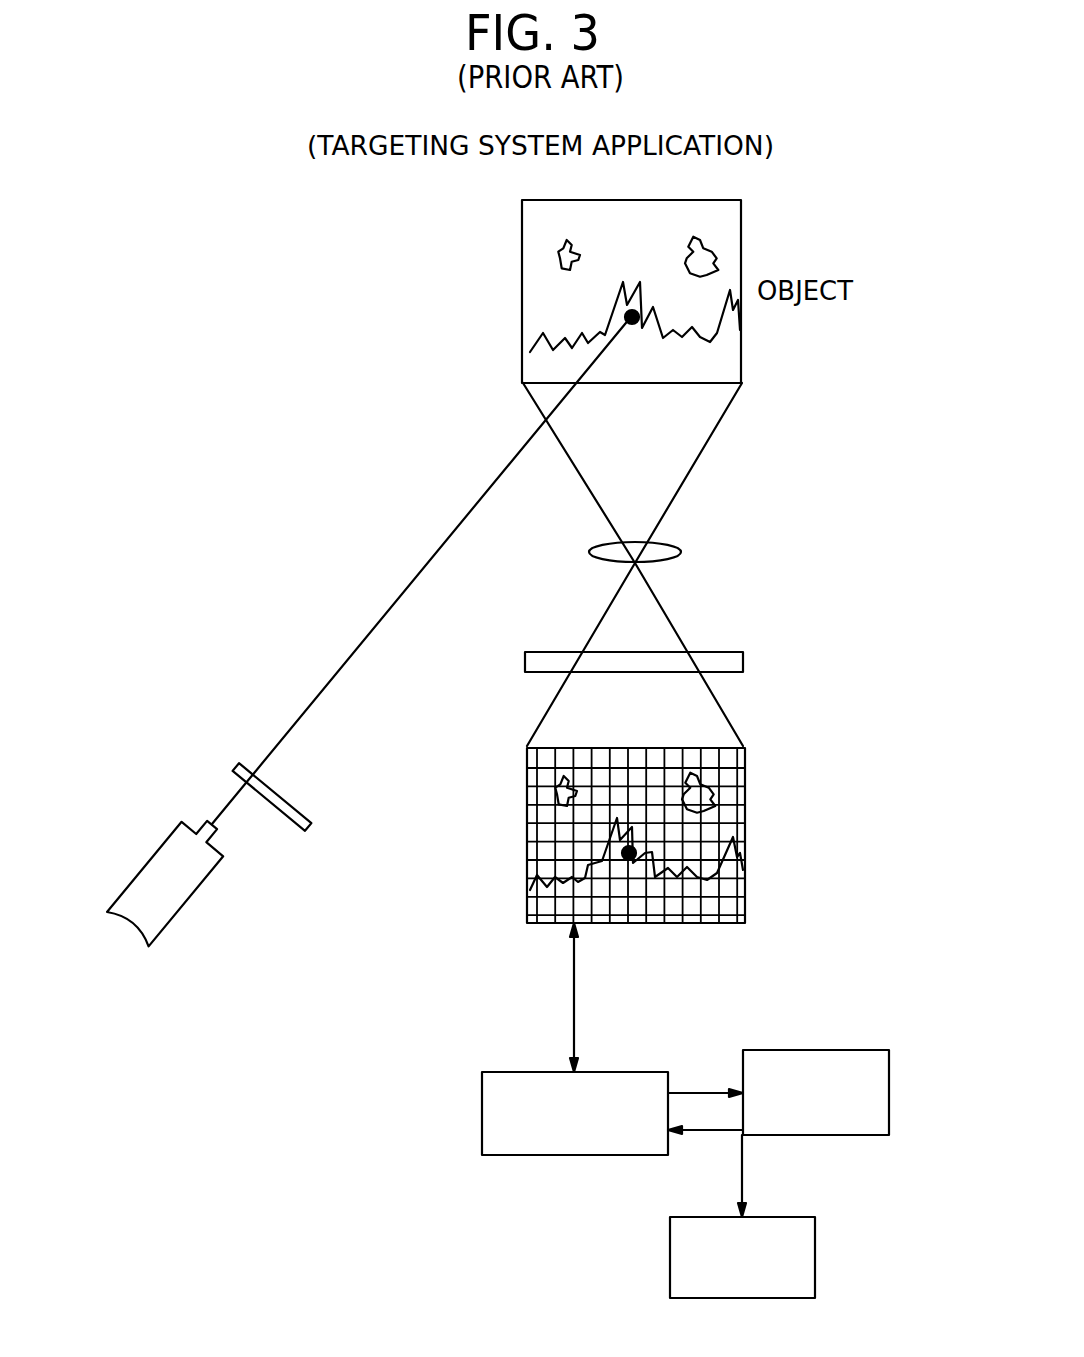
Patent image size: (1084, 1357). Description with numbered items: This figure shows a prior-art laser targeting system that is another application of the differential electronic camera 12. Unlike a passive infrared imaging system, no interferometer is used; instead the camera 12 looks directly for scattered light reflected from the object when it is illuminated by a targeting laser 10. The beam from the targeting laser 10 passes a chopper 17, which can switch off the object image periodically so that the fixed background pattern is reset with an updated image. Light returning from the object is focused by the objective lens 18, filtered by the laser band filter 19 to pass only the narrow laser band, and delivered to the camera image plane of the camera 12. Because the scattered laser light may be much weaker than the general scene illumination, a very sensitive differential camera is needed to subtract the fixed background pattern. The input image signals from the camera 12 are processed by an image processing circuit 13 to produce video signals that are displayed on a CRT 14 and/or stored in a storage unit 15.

The targeting laser 10 is at (172, 845).
The chopper 17 is at (305, 828).
The objective lens 18 is at (668, 543).
The laser band filter 19 is at (525, 661).
The camera 12 is at (723, 907).
The image processing circuit 13 is at (630, 1087).
The CRT 14 is at (865, 1072).
The storage unit 15 is at (802, 1243).